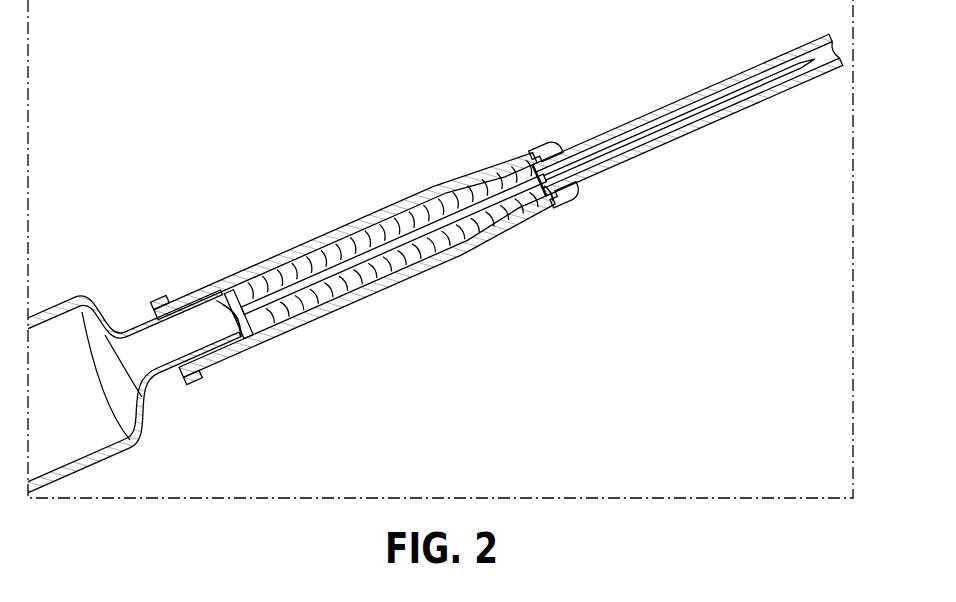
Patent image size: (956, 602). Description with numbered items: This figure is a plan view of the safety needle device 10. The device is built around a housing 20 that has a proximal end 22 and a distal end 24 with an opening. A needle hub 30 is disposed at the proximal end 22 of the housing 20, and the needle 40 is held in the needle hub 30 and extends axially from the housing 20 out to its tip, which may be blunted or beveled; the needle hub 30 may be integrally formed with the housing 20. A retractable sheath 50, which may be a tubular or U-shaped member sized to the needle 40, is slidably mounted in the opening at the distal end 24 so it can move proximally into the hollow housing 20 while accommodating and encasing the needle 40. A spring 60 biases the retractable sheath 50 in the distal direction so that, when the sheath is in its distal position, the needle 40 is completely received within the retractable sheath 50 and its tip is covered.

The safety needle device 10 is at (361, 178).
The housing 20 is at (343, 310).
The proximal end 22 is at (158, 300).
The distal end 24 is at (555, 158).
The needle hub 30 is at (257, 347).
The needle 40 is at (707, 107).
The retractable sheath 50 is at (683, 133).
The spring 60 is at (408, 255).